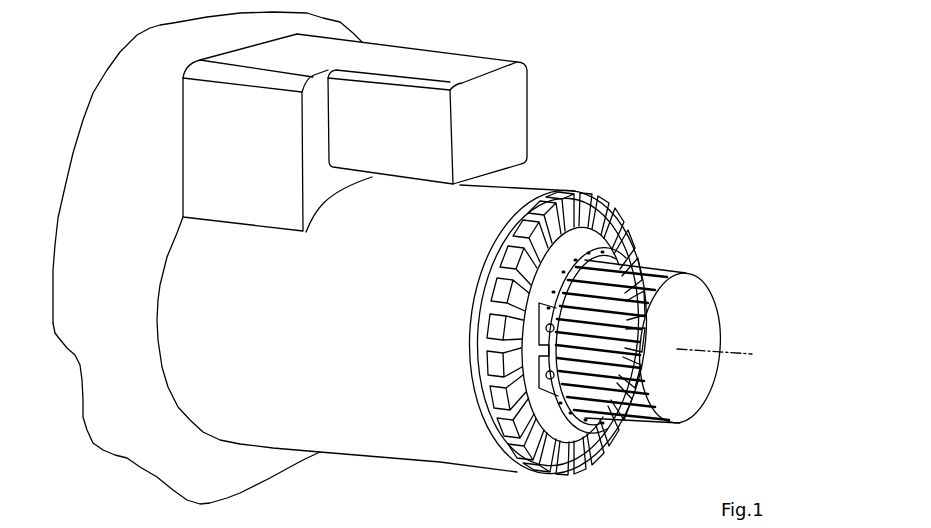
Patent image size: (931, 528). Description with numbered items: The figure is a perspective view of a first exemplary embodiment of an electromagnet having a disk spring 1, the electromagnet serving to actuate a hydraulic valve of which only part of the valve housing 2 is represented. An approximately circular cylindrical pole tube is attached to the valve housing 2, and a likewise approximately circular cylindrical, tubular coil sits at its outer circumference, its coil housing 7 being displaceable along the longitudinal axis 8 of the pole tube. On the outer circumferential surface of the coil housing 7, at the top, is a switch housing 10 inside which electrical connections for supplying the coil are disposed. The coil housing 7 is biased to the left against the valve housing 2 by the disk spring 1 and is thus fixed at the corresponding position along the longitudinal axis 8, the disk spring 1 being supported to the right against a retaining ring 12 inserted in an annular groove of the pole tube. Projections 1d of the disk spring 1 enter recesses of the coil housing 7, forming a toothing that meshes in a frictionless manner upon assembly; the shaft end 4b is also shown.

The disk spring 1 is at (554, 275).
The projections 1d is at (186, 422).
The valve housing 2 is at (113, 247).
The rotor shaft 4b is at (697, 227).
The coil housing 7 is at (326, 310).
The longitudinal axis 8 is at (727, 350).
The switch housing 10 is at (249, 162).
The retaining ring 12 is at (553, 410).